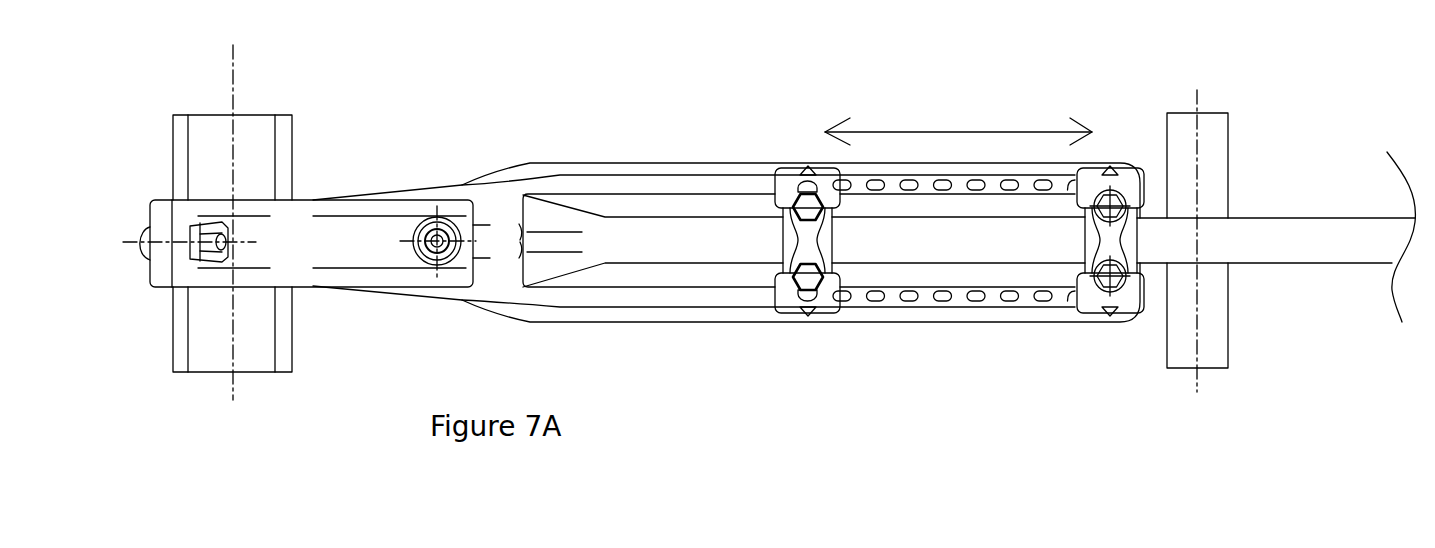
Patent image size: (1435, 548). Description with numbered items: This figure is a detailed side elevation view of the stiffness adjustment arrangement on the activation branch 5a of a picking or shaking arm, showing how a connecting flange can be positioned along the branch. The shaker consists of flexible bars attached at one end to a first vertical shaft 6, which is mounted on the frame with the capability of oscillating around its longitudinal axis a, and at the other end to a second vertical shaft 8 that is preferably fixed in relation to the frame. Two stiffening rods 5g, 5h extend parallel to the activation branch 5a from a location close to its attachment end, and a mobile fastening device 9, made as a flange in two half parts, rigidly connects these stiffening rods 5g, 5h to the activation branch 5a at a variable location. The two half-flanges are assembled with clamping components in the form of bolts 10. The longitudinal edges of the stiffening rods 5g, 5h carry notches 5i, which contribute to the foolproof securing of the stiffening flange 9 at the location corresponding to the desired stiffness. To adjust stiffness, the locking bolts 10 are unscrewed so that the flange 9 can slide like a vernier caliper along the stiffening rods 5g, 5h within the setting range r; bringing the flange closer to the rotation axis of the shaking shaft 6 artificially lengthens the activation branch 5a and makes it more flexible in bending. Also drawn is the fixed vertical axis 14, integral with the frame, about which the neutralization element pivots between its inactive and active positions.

The first vertical shaft 6 is at (213, 140).
The longitudinal axis a is at (232, 53).
The second vertical shaft 8 is at (305, 215).
The stiffening rod 5g is at (753, 185).
The stiffening rod 5h is at (757, 297).
The activation branch 5a is at (948, 252).
The notches 5i is at (978, 191).
The mobile fastening device 9 is at (1134, 185).
The bolts 10 is at (1100, 186).
The setting range r is at (915, 131).
The fixed vertical axis 14 is at (1207, 143).